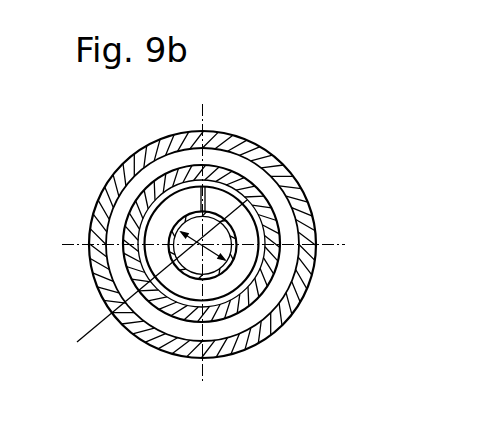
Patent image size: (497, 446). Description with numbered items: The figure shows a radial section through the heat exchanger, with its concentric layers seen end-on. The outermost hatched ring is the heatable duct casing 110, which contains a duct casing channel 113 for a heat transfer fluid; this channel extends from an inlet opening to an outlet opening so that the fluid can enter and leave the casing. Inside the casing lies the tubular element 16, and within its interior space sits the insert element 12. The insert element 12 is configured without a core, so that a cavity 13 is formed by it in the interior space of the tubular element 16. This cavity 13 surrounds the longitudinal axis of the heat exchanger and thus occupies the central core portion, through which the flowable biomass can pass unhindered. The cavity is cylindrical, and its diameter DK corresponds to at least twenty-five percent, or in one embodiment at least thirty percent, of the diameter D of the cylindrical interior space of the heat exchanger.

The heatable duct casing 110 is at (262, 157).
The duct casing channel 113 is at (157, 169).
The insert element 12 is at (213, 277).
The tubular element 16 is at (232, 253).
The cavity 13 is at (196, 263).
The diameter of the cavity of the core portion DK is at (181, 232).
The diameter of the interior of the heat exchanger D is at (153, 283).